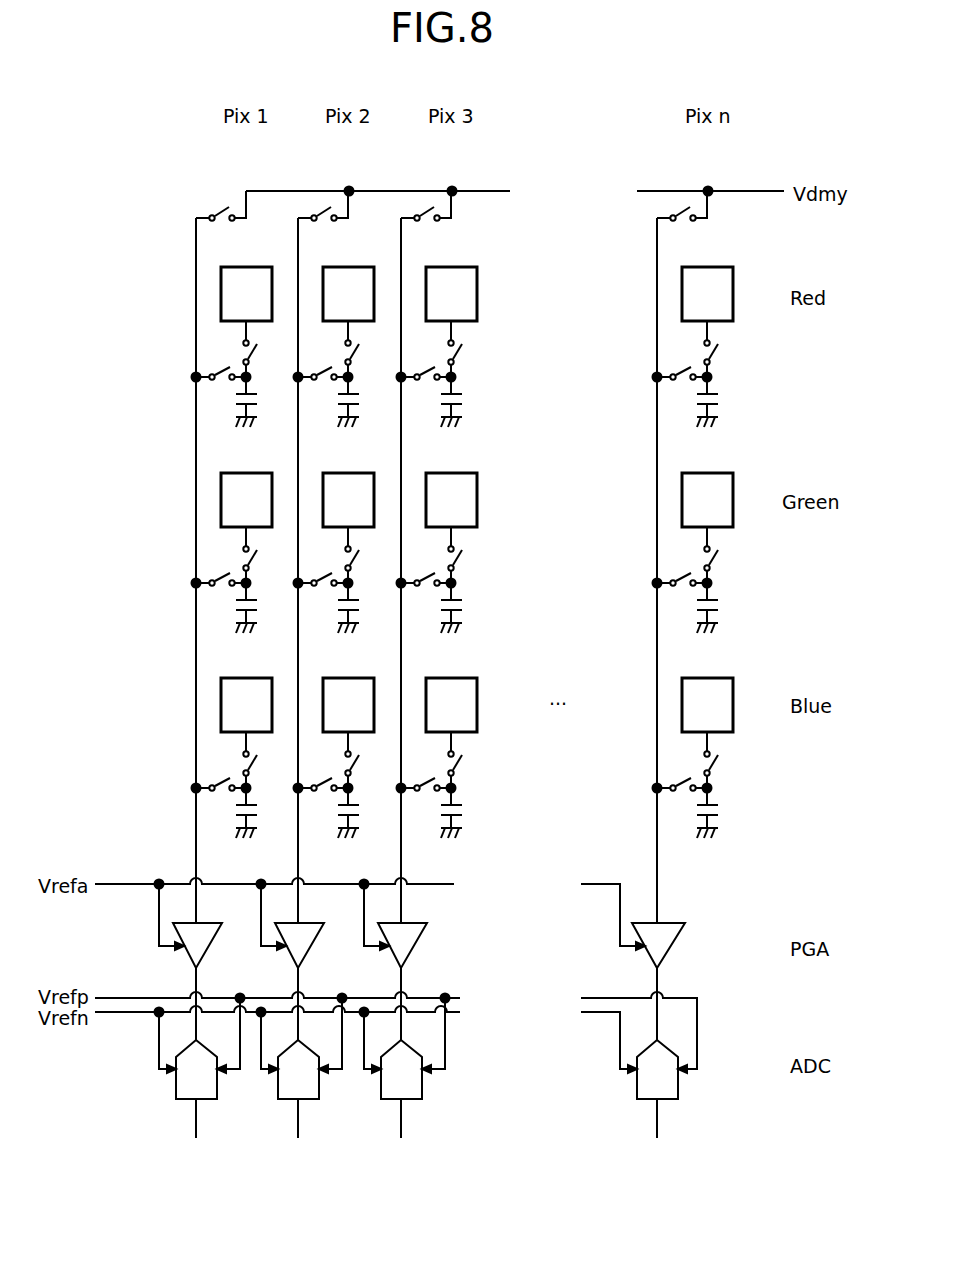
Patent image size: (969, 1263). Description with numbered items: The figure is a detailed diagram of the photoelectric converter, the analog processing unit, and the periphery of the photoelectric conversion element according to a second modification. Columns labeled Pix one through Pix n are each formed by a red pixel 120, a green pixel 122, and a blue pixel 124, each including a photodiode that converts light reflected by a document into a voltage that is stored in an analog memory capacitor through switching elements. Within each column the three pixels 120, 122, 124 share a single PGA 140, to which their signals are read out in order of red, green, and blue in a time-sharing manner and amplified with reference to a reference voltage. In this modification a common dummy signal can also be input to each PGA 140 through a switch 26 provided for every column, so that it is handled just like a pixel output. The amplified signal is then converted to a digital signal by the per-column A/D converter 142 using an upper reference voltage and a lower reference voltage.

The switch 26 is at (222, 206).
The pixel 120 is at (172, 287).
The pixel 122 is at (172, 493).
The pixel 124 is at (172, 697).
The PGA 140 is at (212, 948).
The A/D converter 142 is at (219, 1087).